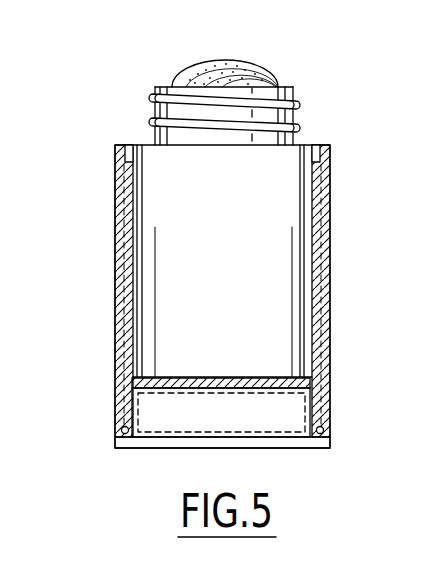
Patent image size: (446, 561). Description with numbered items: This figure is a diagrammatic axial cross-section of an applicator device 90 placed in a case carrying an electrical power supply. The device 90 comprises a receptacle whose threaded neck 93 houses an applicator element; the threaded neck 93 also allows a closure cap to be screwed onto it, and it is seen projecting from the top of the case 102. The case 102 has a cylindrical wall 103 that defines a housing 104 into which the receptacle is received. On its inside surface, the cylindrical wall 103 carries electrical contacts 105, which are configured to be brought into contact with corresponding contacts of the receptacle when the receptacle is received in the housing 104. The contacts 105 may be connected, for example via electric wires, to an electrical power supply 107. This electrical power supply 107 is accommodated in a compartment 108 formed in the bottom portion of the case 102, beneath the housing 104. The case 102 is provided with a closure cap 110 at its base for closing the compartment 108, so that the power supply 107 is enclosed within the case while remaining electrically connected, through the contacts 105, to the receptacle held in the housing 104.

The applicator device 90 is at (348, 271).
The threaded neck 93 is at (154, 122).
The case 102 is at (328, 392).
The cylindrical wall 103 is at (324, 200).
The housing 104 is at (131, 266).
The electrical contacts 105 is at (128, 145).
The electrical power supply 107 is at (258, 413).
The compartment 108 is at (133, 395).
The closure cap 110 is at (313, 443).